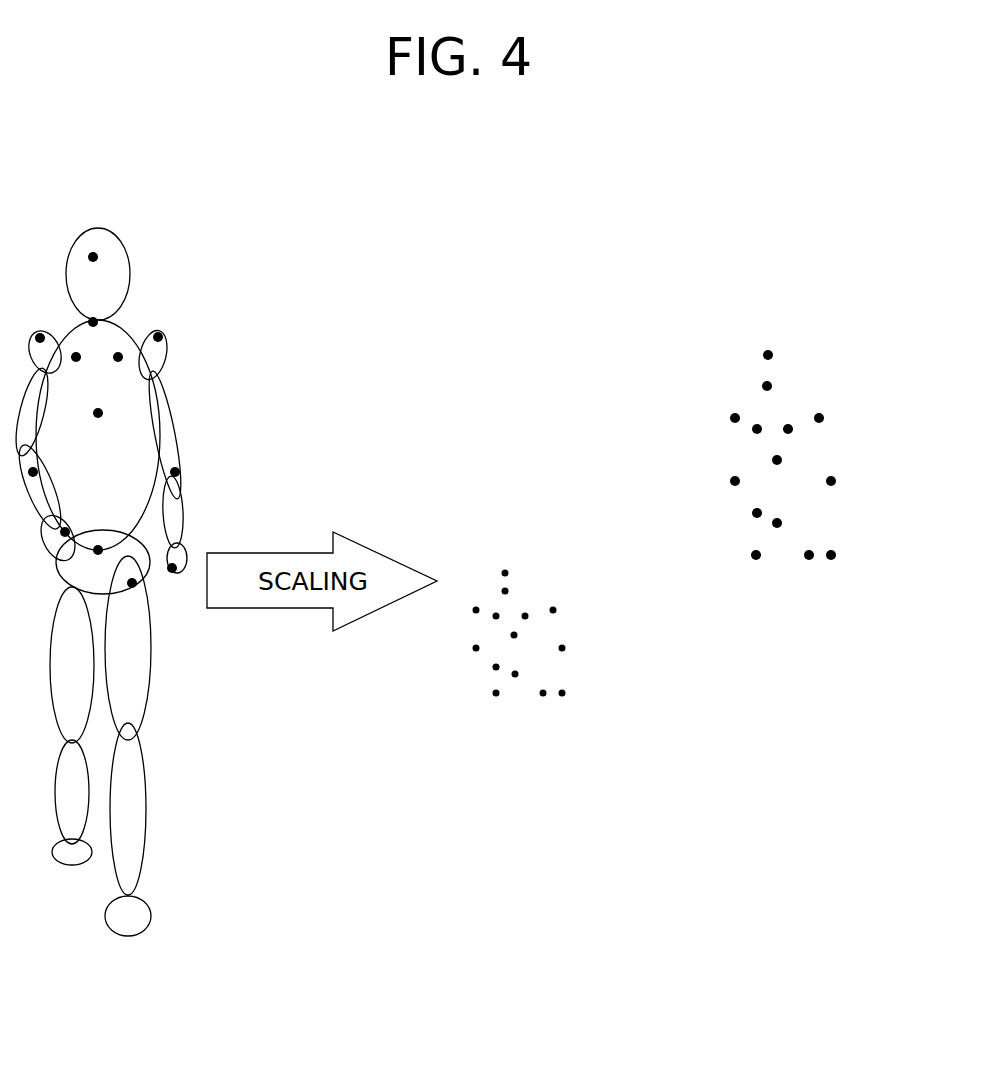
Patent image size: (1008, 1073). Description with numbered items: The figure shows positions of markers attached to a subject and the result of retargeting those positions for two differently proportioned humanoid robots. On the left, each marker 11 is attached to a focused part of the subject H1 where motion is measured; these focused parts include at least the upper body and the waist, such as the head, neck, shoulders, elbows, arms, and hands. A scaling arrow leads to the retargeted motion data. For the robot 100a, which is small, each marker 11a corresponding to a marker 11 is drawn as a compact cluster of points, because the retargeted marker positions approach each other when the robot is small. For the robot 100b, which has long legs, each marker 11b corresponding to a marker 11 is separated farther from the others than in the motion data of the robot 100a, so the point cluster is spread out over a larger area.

The subject H1 is at (236, 246).
The marker 11 is at (162, 335).
The robot 100a is at (586, 509).
The marker 11a is at (556, 608).
The robot 100b is at (840, 339).
The marker 11b is at (823, 415).